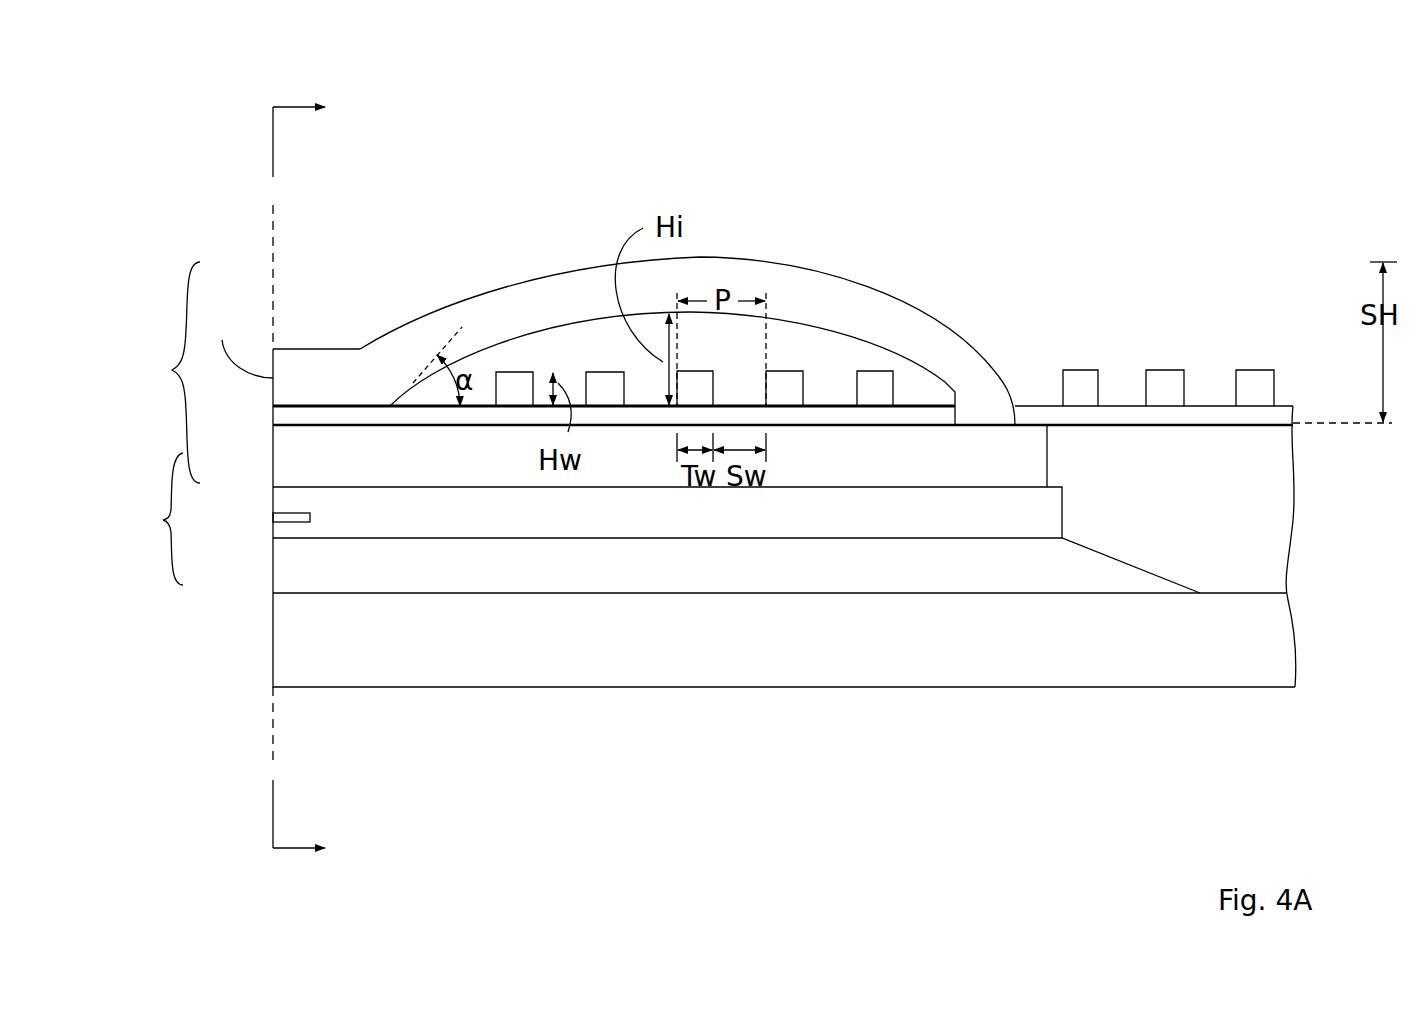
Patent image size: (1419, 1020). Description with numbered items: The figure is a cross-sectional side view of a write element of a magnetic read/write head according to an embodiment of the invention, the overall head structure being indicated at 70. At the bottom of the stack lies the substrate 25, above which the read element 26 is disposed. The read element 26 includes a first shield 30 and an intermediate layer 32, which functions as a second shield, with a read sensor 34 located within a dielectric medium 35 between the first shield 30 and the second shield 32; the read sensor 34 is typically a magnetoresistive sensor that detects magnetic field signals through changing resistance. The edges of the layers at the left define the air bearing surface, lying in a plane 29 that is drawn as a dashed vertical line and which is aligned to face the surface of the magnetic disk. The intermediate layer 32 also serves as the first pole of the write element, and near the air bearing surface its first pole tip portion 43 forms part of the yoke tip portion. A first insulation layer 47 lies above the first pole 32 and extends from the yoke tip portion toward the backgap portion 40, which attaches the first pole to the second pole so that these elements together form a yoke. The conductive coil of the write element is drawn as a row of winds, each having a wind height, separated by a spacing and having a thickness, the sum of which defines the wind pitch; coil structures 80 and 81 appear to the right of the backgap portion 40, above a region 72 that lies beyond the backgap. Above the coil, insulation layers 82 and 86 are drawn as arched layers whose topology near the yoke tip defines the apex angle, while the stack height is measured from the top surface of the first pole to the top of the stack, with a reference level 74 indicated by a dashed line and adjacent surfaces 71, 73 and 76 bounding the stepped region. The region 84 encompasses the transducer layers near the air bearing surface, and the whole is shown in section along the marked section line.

The plane 29 is at (273, 146).
The read/write head structure 70 is at (1138, 110).
The substrate 25 is at (434, 652).
The first shield 30 is at (434, 581).
The dielectric medium 35 is at (434, 526).
The read sensor 34 is at (310, 518).
The intermediate layer 32 is at (434, 474).
The first pole tip portion 43 is at (338, 464).
The first insulation layer 47 is at (508, 412).
The read element 26 is at (160, 519).
The air bearing surface region 84 is at (250, 372).
The outer coil insulation layer 82 is at (836, 352).
The inner coil insulation layer 86 is at (900, 334).
The yoke edge 73 is at (913, 423).
The backgap portion 40 is at (970, 375).
The coil turns 81 is at (1094, 401).
The coil structure 80 is at (1288, 378).
The insulation substrate 72 is at (1200, 539).
The reference plane 74 is at (1313, 425).
The sloped surface 76 is at (1223, 425).
The step edge 71 is at (1133, 565).